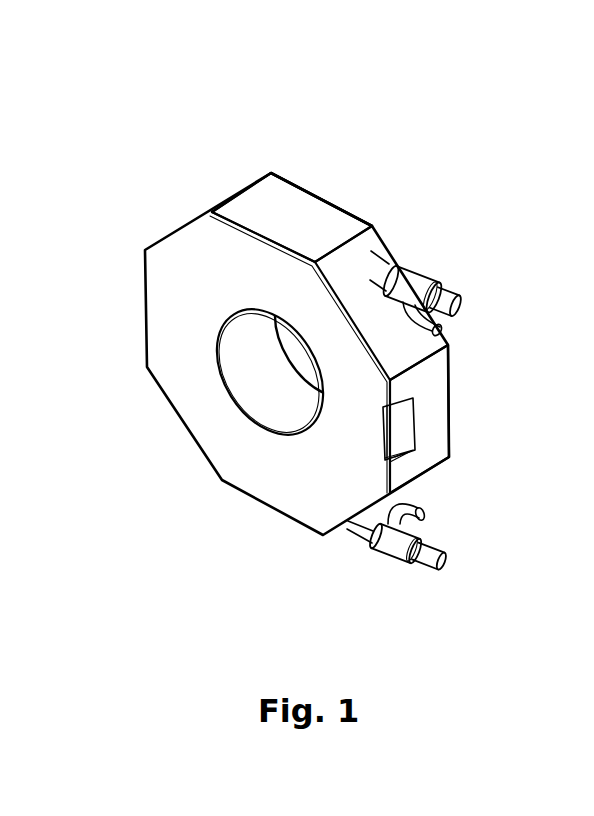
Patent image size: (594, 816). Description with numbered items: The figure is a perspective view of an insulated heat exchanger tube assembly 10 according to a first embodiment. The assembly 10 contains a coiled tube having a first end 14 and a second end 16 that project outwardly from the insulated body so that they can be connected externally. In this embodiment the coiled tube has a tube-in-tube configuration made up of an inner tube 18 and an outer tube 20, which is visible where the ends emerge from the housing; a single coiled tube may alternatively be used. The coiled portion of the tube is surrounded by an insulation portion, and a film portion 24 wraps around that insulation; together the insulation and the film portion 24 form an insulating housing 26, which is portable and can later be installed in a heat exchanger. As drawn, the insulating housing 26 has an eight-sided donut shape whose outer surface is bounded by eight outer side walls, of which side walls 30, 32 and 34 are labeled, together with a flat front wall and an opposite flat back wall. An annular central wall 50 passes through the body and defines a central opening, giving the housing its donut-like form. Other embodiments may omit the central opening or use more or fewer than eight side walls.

The insulated heat exchanger tube assembly 10 is at (226, 142).
The first end 14 is at (457, 292).
The second end 16 is at (429, 572).
The inner tube 18 is at (442, 547).
The outer tube 20 is at (350, 533).
The film portion 24 is at (333, 200).
The insulating housing 26 is at (295, 184).
The outer side wall 30 is at (438, 407).
The outer side wall 32 is at (412, 345).
The outer side wall 34 is at (277, 207).
The annular central wall 50 is at (252, 393).